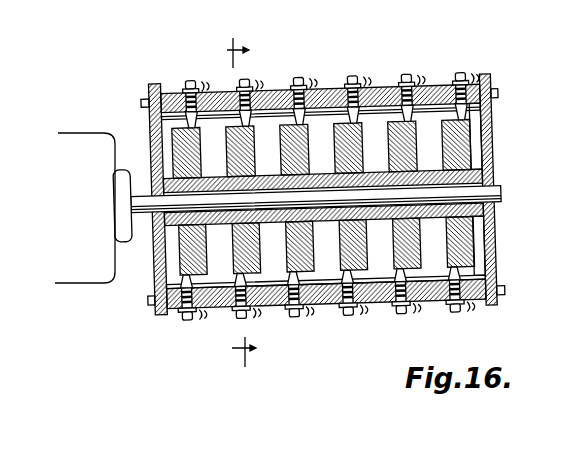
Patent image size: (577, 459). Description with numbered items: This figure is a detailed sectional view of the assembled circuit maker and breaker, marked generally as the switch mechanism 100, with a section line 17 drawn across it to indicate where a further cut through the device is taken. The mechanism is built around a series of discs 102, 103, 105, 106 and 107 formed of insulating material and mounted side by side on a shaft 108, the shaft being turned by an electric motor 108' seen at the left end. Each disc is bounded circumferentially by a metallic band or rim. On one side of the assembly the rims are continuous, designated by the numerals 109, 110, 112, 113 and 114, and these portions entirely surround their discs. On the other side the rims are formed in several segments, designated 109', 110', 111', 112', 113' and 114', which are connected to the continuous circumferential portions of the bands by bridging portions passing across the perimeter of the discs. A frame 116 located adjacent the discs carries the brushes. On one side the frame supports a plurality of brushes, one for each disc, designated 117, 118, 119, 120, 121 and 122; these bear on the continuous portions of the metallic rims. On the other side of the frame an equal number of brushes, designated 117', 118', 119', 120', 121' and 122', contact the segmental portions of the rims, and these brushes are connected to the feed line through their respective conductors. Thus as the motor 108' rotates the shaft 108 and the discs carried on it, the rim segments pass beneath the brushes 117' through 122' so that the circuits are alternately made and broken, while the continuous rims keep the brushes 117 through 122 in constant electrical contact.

The switch assembly 100 is at (131, 100).
The disc 102 is at (230, 152).
The disc 103 is at (205, 150).
The disc 105 is at (335, 128).
The disc 106 is at (415, 152).
The disc 107 is at (480, 166).
The shaft 108 is at (329, 200).
The electric motor 108' is at (76, 194).
The continuous rim portion 109 is at (158, 132).
The rim segment 109' is at (203, 85).
The continuous rim portion 110 is at (278, 239).
The rim segment 110' is at (259, 248).
The rim segment 111' is at (298, 326).
The continuous rim portion 112 is at (346, 336).
The rim segment 112' is at (384, 308).
The continuous rim portion 113 is at (369, 245).
The rim segment 113' is at (433, 311).
The continuous rim portion 114 is at (461, 325).
The rim segment 114' is at (513, 245).
The frame 116 is at (171, 90).
The brush 117 is at (285, 291).
The brush 117' is at (286, 119).
The brush 118 is at (197, 317).
The brush 118' is at (226, 123).
The brush 119 is at (295, 321).
The brush 119' is at (300, 113).
The brush 120 is at (347, 306).
The brush 120' is at (384, 87).
The brush 121 is at (394, 337).
The brush 121' is at (435, 76).
The brush 122 is at (523, 281).
The brush 122' is at (512, 189).
The section line 17- 17 is at (239, 204).